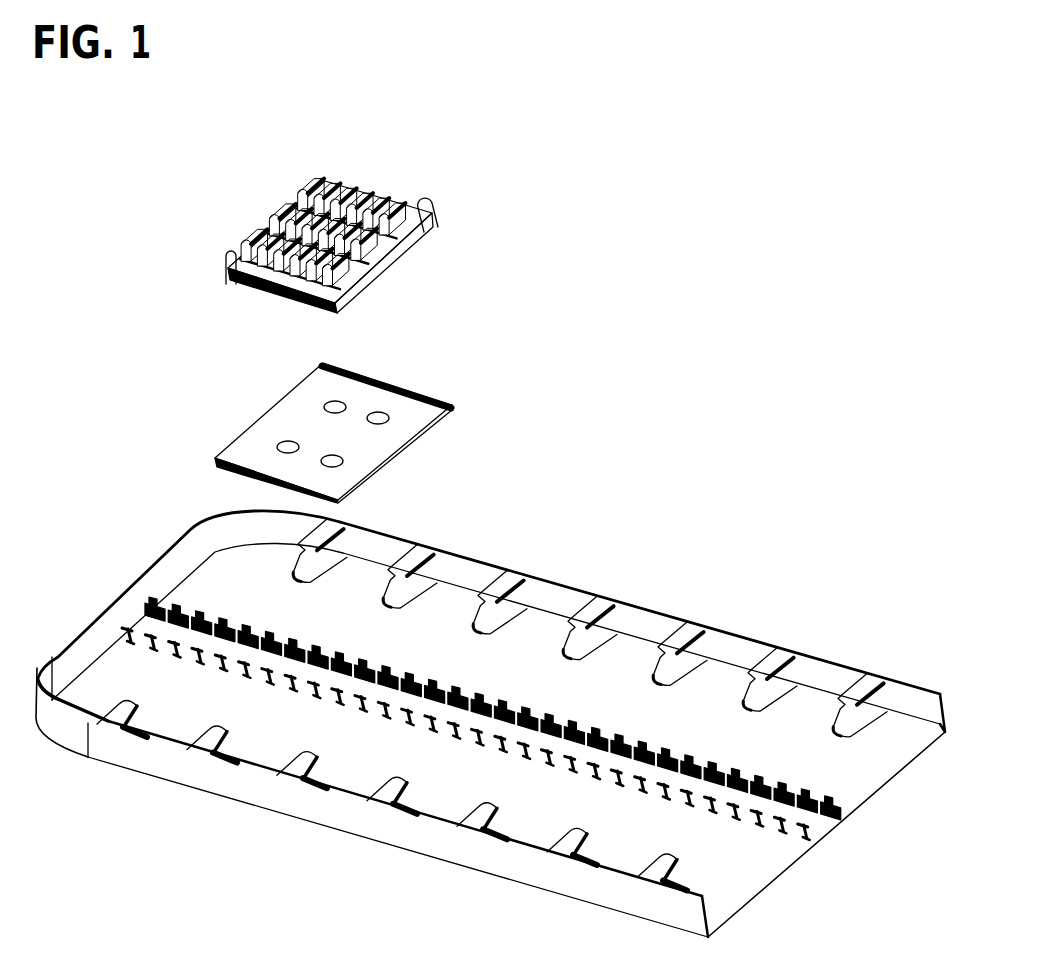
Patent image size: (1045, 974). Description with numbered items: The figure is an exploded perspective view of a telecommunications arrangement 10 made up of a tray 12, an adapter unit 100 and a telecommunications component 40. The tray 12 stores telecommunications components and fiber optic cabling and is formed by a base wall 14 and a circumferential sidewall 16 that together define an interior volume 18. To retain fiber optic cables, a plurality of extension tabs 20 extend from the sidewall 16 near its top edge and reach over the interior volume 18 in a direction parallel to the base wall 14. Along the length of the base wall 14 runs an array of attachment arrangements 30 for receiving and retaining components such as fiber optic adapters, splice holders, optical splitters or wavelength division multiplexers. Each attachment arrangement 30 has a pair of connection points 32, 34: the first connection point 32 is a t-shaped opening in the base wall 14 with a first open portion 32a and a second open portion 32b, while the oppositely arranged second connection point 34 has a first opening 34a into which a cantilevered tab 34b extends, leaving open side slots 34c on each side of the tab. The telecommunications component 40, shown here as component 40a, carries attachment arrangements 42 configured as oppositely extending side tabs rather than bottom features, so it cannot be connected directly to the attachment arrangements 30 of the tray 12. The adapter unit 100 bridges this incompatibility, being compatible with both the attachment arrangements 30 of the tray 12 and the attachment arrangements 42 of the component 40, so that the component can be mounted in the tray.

The telecommunications arrangement 10 is at (102, 398).
The tray 12 is at (412, 842).
The base wall 14 is at (725, 885).
The circumferential sidewall 16 is at (818, 670).
The interior volume 18 is at (217, 568).
The extension tabs 20 is at (673, 642).
The attachment arrangements 30 is at (828, 785).
The first connection point 32 is at (805, 832).
The first open portion 32a is at (807, 825).
The second open portion 32b is at (800, 832).
The second connection point 34 is at (840, 797).
The first opening 34a is at (820, 815).
The cantilevered tab 34b is at (838, 802).
The open side slots 34c is at (827, 808).
The telecommunications component 40 is at (357, 197).
The telecommunications component 40a is at (430, 222).
The attachment arrangements 42 is at (280, 298).
The adapter unit 100 is at (258, 448).